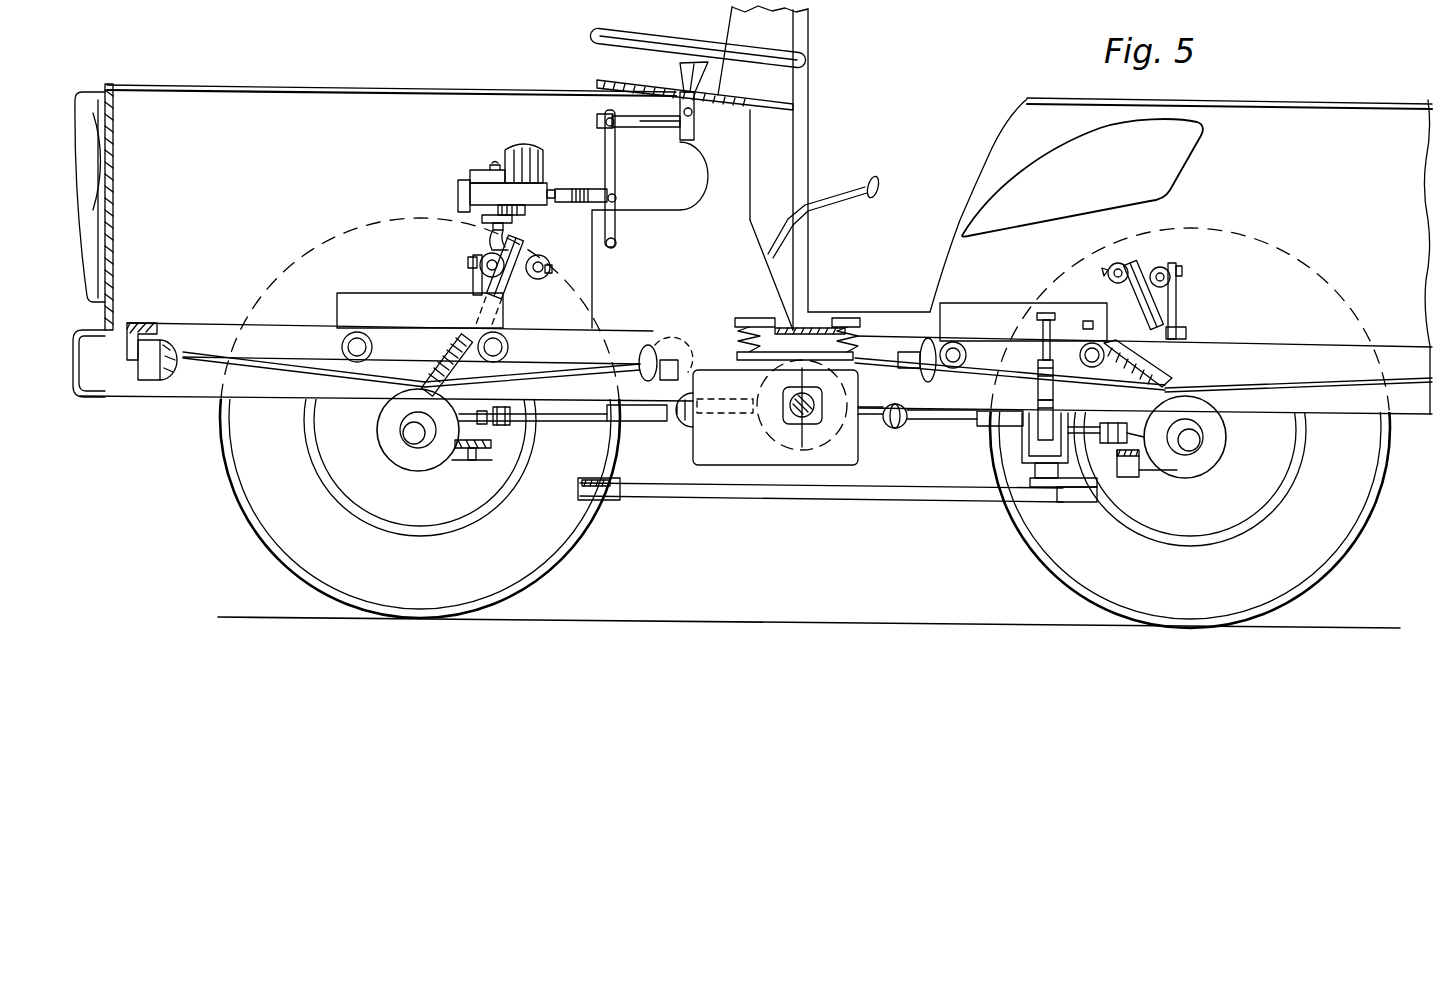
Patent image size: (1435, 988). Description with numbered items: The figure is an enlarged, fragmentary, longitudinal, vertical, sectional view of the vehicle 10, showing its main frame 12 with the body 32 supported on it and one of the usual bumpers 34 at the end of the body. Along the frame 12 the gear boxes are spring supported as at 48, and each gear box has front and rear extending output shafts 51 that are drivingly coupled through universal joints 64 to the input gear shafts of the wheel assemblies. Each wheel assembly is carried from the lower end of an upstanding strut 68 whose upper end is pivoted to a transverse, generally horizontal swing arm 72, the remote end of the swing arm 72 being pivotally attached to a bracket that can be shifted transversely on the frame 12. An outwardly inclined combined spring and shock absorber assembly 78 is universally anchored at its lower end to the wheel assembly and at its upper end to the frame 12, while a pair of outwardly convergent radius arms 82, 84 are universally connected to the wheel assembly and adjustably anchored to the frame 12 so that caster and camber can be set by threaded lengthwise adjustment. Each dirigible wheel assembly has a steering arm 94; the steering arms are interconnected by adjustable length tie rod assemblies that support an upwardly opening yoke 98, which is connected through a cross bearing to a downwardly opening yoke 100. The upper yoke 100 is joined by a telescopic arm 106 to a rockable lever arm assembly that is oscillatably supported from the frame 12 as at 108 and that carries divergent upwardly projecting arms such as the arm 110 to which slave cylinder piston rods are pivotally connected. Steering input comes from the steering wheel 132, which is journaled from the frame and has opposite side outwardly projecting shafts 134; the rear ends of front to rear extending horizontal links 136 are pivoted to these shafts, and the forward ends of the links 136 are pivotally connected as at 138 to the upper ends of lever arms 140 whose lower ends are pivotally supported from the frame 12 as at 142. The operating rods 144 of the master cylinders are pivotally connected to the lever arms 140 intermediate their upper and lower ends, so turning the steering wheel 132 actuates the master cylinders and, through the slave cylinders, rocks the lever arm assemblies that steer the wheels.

The vehicle 10 is at (362, 86).
The main frame 12 is at (208, 328).
The body 32 is at (113, 282).
The front bumper 34 is at (86, 402).
The spring support 48 is at (717, 335).
The output shaft 51 is at (695, 436).
The universal joint 64 is at (903, 430).
The strut 68 is at (1137, 303).
The swing arm 72 is at (1120, 263).
The combined spring and shock absorber assembly 78 is at (441, 337).
The radius arm 82 is at (287, 371).
The radius arm 84 is at (567, 378).
The steering arm 94 is at (1200, 458).
The yoke 98 is at (1020, 452).
The yoke 100 is at (1037, 410).
The telescopic arm 106 is at (1052, 389).
The lever arm assembly support 108 is at (1030, 337).
The arm 110 is at (1034, 322).
The steering wheel 132 is at (690, 44).
The shaft 134 is at (696, 113).
The link 136 is at (652, 128).
The pivot connection 138 is at (607, 118).
The lever arm 140 is at (606, 138).
The pivot 142 is at (617, 241).
The operating rod 144 is at (565, 185).